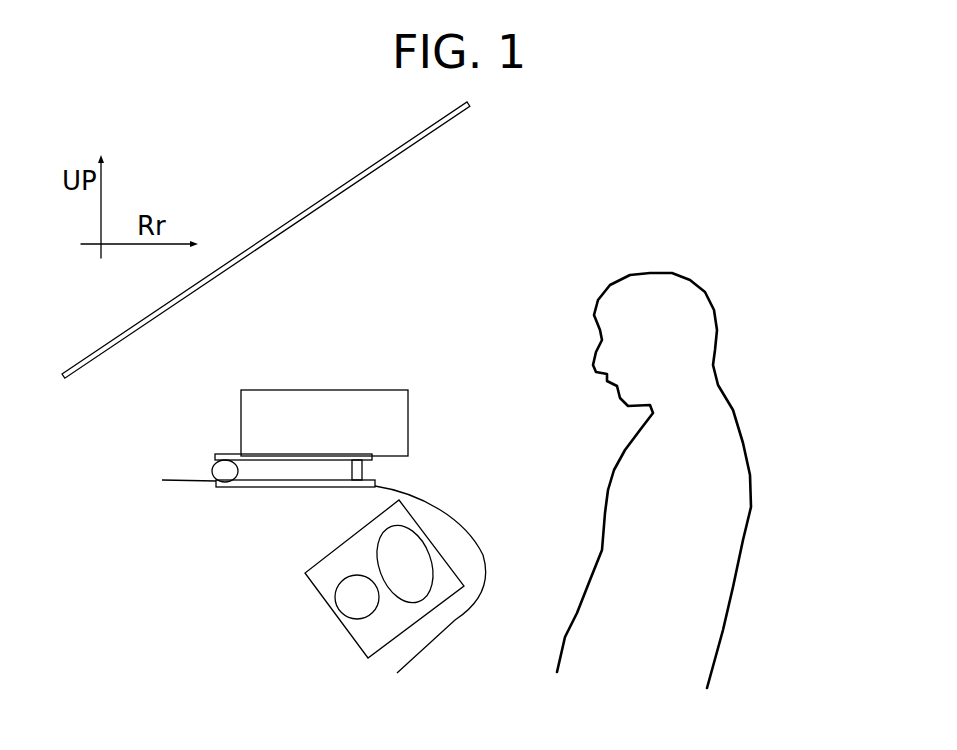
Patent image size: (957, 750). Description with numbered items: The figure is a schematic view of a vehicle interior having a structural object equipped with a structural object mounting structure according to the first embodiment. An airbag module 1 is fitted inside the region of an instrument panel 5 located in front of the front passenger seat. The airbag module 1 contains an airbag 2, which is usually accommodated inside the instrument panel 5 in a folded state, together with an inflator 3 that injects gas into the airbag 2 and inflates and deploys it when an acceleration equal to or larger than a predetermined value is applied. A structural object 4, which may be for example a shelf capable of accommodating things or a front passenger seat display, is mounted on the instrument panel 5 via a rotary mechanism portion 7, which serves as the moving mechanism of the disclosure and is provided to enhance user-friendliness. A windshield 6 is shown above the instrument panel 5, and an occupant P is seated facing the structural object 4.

The airbag module 1 is at (308, 558).
The airbag 2 is at (412, 585).
The inflator 3 is at (352, 600).
The structural object 4 is at (420, 440).
The instrument panel 5 is at (158, 495).
The windshield 6 is at (242, 280).
The rotary mechanism portion 7 is at (200, 461).
The occupant P is at (772, 457).